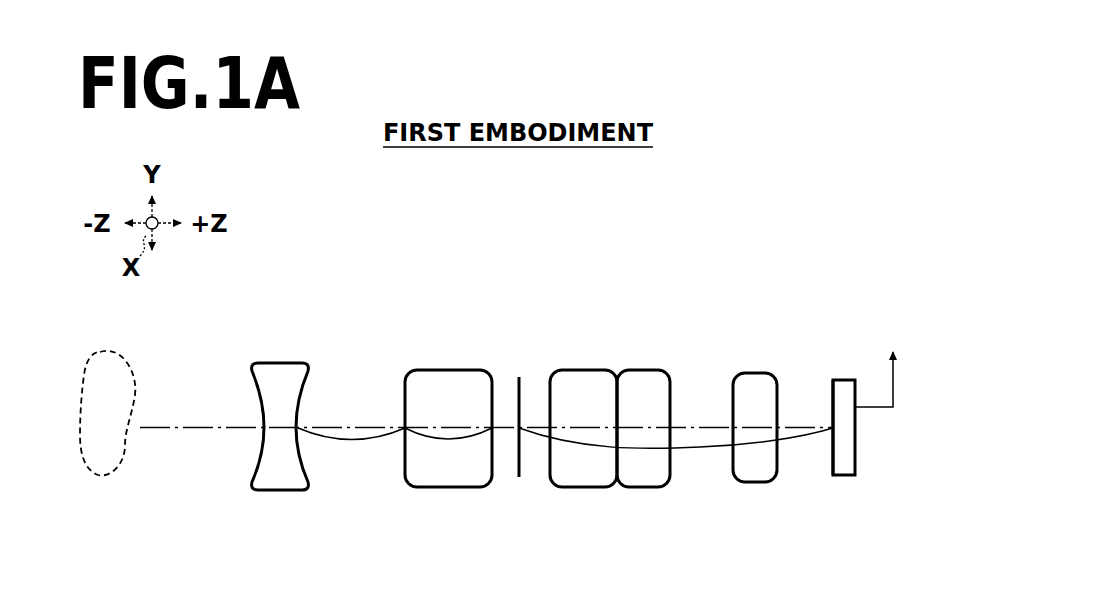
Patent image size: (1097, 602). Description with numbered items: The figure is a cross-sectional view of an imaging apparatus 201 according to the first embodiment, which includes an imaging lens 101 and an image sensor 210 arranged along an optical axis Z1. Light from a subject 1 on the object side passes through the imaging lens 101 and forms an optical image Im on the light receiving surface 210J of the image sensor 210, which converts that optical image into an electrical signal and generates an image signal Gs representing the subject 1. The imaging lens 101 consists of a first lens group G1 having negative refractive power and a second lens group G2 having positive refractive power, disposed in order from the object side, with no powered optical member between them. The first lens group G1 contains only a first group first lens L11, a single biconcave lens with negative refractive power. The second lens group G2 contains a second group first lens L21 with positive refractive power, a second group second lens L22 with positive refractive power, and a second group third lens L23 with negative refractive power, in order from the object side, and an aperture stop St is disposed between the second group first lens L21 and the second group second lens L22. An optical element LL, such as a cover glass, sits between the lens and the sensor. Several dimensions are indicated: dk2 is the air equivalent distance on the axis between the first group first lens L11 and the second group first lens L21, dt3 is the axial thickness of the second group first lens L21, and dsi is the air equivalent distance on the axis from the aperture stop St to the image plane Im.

The subject 1 is at (102, 356).
The optical axis Z1 is at (194, 426).
The imaging lens 101 is at (577, 253).
The first lens group G1 is at (283, 315).
The first group first lens L11 is at (284, 376).
The second lens group G2 is at (425, 289).
The second group first lens L21 is at (448, 377).
The aperture stop St is at (517, 385).
The second group second lens L22 is at (582, 376).
The second group third lens L23 is at (641, 376).
The distance between the first group first lens and the second group first lens dk2 is at (351, 442).
The thickness of the second group first lens dt3 is at (450, 441).
The distance between the aperture stop and the image plane dsi is at (712, 449).
The optical element LL is at (757, 384).
The image sensor 210 is at (860, 455).
The light receiving surface 210J is at (833, 390).
The optical image Im is at (833, 468).
The image signal Gs is at (894, 381).
The imaging apparatus 201 is at (825, 220).